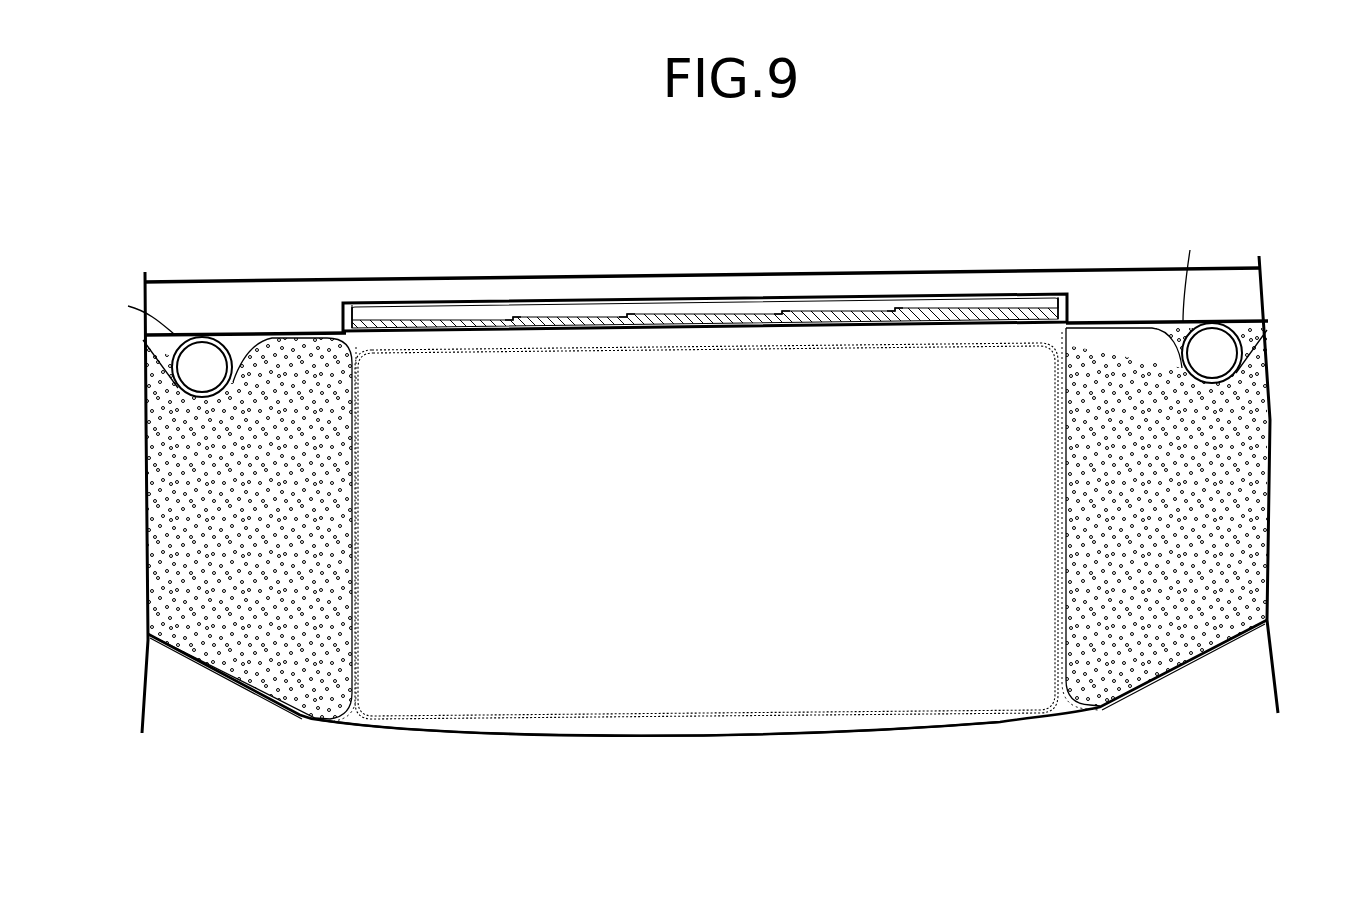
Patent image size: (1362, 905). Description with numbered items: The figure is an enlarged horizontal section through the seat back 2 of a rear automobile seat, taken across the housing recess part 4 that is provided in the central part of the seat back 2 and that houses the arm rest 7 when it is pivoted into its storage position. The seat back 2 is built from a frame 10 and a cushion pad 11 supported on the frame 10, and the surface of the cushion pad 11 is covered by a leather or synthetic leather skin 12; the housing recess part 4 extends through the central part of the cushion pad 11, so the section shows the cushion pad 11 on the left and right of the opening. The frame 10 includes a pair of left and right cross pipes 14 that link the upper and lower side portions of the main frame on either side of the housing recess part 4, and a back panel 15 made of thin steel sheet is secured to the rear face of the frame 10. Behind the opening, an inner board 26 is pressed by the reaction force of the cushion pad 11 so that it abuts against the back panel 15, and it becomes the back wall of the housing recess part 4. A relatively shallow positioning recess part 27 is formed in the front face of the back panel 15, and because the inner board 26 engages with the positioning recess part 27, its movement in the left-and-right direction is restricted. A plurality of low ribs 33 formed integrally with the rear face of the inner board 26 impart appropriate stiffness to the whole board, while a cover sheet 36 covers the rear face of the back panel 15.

The seat back 2 is at (1240, 460).
The housing recess part 4 is at (518, 682).
The arm rest 7 is at (797, 735).
The frame 10 is at (226, 336).
The cushion pad 11 is at (1226, 522).
The skin 12 is at (1192, 672).
The cross pipe 14 is at (654, 273).
The back panel 15 is at (982, 295).
The inner board 26 is at (704, 328).
The positioning recess part 27 is at (1004, 326).
The rib 33 is at (347, 320).
The cover sheet 36 is at (768, 274).